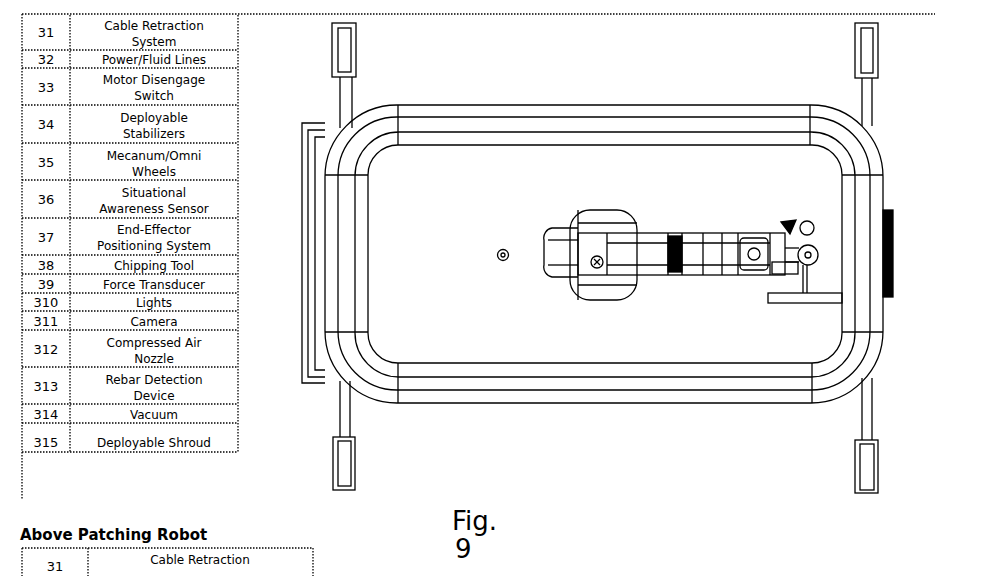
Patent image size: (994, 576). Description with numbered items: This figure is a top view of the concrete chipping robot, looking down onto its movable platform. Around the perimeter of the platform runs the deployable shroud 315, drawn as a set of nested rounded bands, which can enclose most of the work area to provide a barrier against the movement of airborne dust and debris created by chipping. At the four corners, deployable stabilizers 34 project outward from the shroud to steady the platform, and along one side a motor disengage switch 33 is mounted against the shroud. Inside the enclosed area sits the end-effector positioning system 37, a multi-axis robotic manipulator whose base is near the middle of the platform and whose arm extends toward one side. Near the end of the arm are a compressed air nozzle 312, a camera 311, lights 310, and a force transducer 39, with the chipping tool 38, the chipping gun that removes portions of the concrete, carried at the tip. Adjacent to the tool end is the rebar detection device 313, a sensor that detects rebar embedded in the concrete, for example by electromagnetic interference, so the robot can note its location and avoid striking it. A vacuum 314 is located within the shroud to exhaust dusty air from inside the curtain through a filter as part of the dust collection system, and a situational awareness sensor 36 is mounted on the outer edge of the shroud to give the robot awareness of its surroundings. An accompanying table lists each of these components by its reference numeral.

The motor disengage switch 33 is at (303, 148).
The deployable stabilizers 34 is at (340, 420).
The situational awareness sensor 36 is at (893, 213).
The end-effector positioning system 37 is at (584, 218).
The chipping tool 38 is at (787, 273).
The force transducer 39 is at (815, 242).
The lights 310 is at (803, 224).
The camera 311 is at (786, 225).
The compressed air nozzle 312 is at (747, 233).
The rebar detection device 313 is at (781, 306).
The vacuum 314 is at (494, 244).
The deployable shroud 315 is at (348, 126).